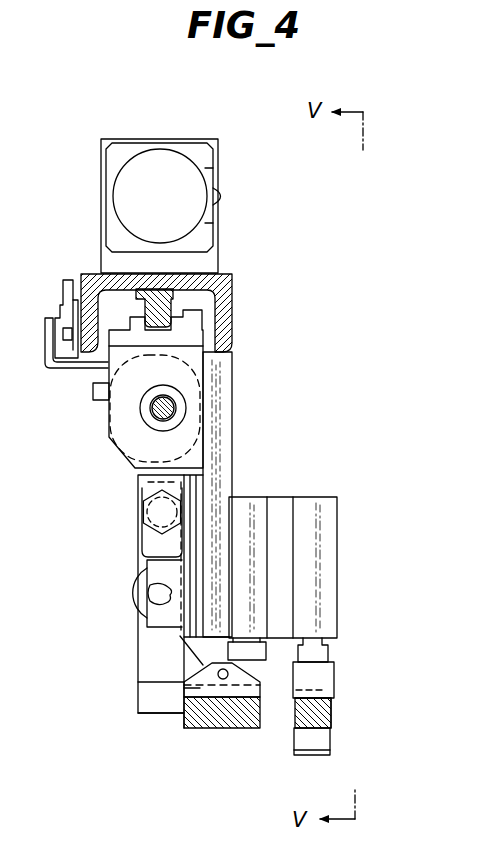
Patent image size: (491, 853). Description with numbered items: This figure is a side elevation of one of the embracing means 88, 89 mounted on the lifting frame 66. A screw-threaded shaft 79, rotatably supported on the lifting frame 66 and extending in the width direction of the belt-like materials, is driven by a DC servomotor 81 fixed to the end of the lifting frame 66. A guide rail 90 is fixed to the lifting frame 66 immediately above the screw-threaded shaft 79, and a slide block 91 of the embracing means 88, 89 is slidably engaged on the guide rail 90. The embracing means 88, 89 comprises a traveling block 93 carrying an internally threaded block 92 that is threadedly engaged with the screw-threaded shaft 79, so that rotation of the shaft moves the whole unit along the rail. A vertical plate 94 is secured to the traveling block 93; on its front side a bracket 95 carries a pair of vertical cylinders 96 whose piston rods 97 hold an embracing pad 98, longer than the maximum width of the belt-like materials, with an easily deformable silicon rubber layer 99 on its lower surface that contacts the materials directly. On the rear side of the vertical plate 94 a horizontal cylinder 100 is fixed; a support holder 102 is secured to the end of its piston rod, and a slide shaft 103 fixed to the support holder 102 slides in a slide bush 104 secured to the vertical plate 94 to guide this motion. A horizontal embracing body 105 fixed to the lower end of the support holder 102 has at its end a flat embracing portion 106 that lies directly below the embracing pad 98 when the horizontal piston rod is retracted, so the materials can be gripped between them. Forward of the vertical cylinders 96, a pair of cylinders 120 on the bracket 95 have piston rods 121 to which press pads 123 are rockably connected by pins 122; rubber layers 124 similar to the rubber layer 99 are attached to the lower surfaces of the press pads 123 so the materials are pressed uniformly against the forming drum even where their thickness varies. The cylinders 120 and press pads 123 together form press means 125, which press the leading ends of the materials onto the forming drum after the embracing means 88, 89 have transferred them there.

The lifting frame 66 is at (228, 290).
The screw-threaded shaft 79 is at (168, 408).
The DC servomotor 81 is at (160, 160).
The embracing means 88 is at (332, 702).
The embracing means 89 is at (313, 713).
The guide rail 90 is at (130, 316).
The slide block 91 is at (175, 337).
The internally threaded block 92 is at (135, 418).
The traveling block 93 is at (108, 373).
The vertical plate 94 is at (225, 413).
The bracket 95 is at (290, 500).
The vertical cylinder 96 is at (328, 570).
The piston rod 97 is at (330, 647).
The embracing pad 98 is at (334, 668).
The rubber layer 99 is at (331, 706).
The horizontal cylinder 100 is at (148, 512).
The support holder 102 is at (145, 633).
The slide shaft 103 is at (157, 588).
The slide bush 104 is at (133, 596).
The horizontal embracing body 105 is at (297, 740).
The flat embracing portion 106 is at (297, 757).
The cylinder 120 is at (255, 495).
The piston rod 121 is at (247, 650).
The pin 122 is at (210, 668).
The press pad 123 is at (190, 688).
The rubber layer 124 is at (222, 718).
The press means 125 is at (172, 725).